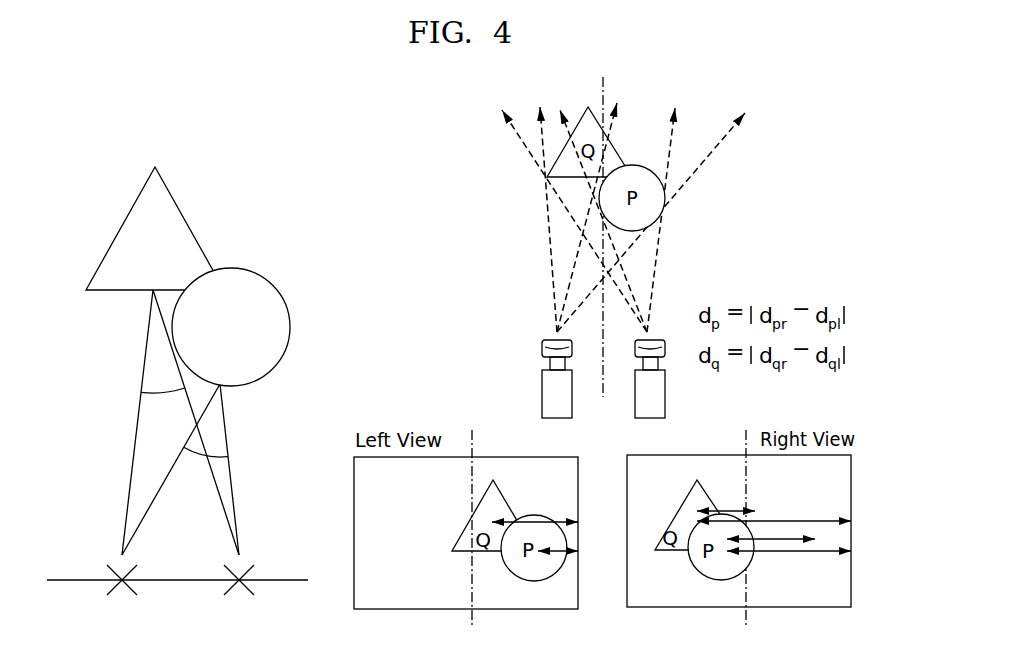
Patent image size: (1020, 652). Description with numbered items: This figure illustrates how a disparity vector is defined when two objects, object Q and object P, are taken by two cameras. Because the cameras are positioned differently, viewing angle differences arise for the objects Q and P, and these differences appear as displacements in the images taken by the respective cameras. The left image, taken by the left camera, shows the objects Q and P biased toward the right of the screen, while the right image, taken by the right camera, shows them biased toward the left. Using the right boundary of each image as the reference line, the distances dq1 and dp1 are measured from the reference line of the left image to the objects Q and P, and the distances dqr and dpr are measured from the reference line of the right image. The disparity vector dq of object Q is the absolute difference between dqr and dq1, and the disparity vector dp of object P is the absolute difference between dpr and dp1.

The object P is at (231, 327).
The object Q is at (155, 228).
The distance of object Q from the reference line of the left image dq1 is at (535, 506).
The distance of object P from the reference line of the left image dp1 is at (559, 565).
The disparity vector of object Q dq is at (726, 498).
The distance of object Q from the reference line of the right image dqr is at (774, 506).
The disparity vector of object P dp is at (771, 533).
The distance of object P from the reference line of the right image dpr is at (789, 561).